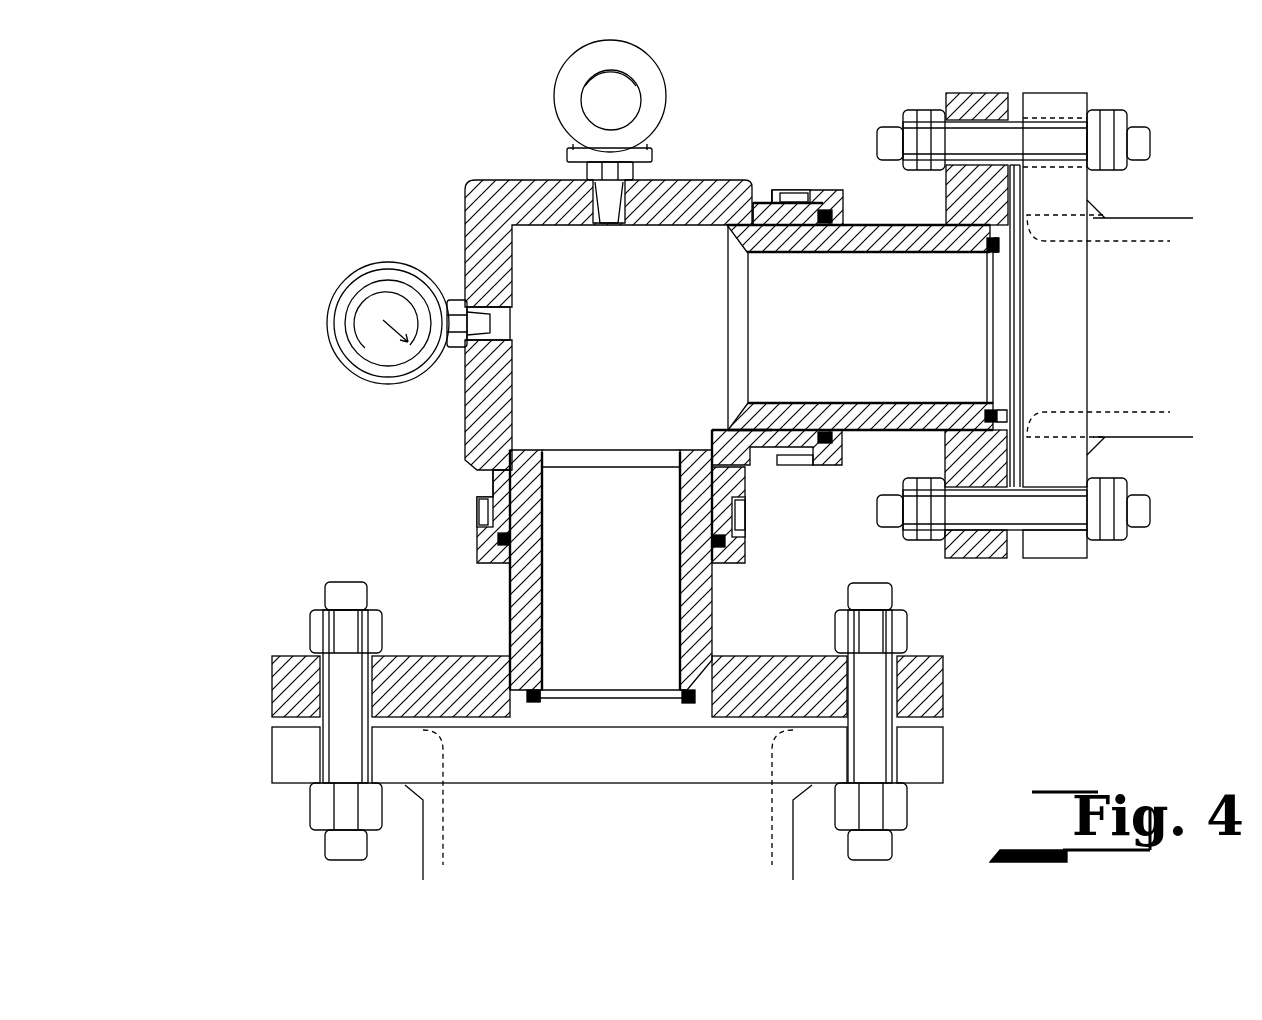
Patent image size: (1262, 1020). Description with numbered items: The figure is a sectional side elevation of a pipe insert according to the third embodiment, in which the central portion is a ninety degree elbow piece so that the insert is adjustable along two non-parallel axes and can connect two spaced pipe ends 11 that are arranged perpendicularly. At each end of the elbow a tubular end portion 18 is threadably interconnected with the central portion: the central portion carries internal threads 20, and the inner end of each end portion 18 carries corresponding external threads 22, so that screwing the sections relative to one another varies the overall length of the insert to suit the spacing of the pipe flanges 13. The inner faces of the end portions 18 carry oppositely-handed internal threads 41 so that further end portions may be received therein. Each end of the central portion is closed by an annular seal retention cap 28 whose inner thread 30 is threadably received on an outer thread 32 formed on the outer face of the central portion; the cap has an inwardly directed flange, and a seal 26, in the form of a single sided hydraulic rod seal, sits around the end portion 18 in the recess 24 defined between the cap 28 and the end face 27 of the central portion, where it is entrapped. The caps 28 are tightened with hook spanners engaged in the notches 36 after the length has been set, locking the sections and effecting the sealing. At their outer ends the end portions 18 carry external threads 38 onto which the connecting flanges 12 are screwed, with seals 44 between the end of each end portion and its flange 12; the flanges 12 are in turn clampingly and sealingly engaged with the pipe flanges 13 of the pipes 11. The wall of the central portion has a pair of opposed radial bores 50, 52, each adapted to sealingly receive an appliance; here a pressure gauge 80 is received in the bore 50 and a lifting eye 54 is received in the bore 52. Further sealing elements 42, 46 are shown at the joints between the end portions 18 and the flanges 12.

The pipe 11 is at (1065, 562).
The flange 12 is at (960, 100).
The pipe flange 13 is at (1062, 102).
The end portion 18 is at (517, 613).
The internal thread 20 is at (710, 217).
The external thread 22 is at (727, 250).
The recess 24 is at (843, 228).
The seal 26 is at (826, 430).
The end face 27 is at (826, 213).
The seal retention cap 28 is at (845, 450).
The inner thread 30 is at (776, 192).
The outer thread 32 is at (786, 212).
The notch 36 is at (793, 193).
The external thread 38 is at (983, 487).
The internal thread 41 is at (935, 403).
The seal 42 is at (1000, 244).
The seal 44 is at (993, 253).
The seal 46 is at (1000, 415).
The radial bore 50 is at (505, 322).
The radial bore 52 is at (610, 190).
The lifting eye 54 is at (568, 92).
The pressure gauge 80 is at (372, 282).